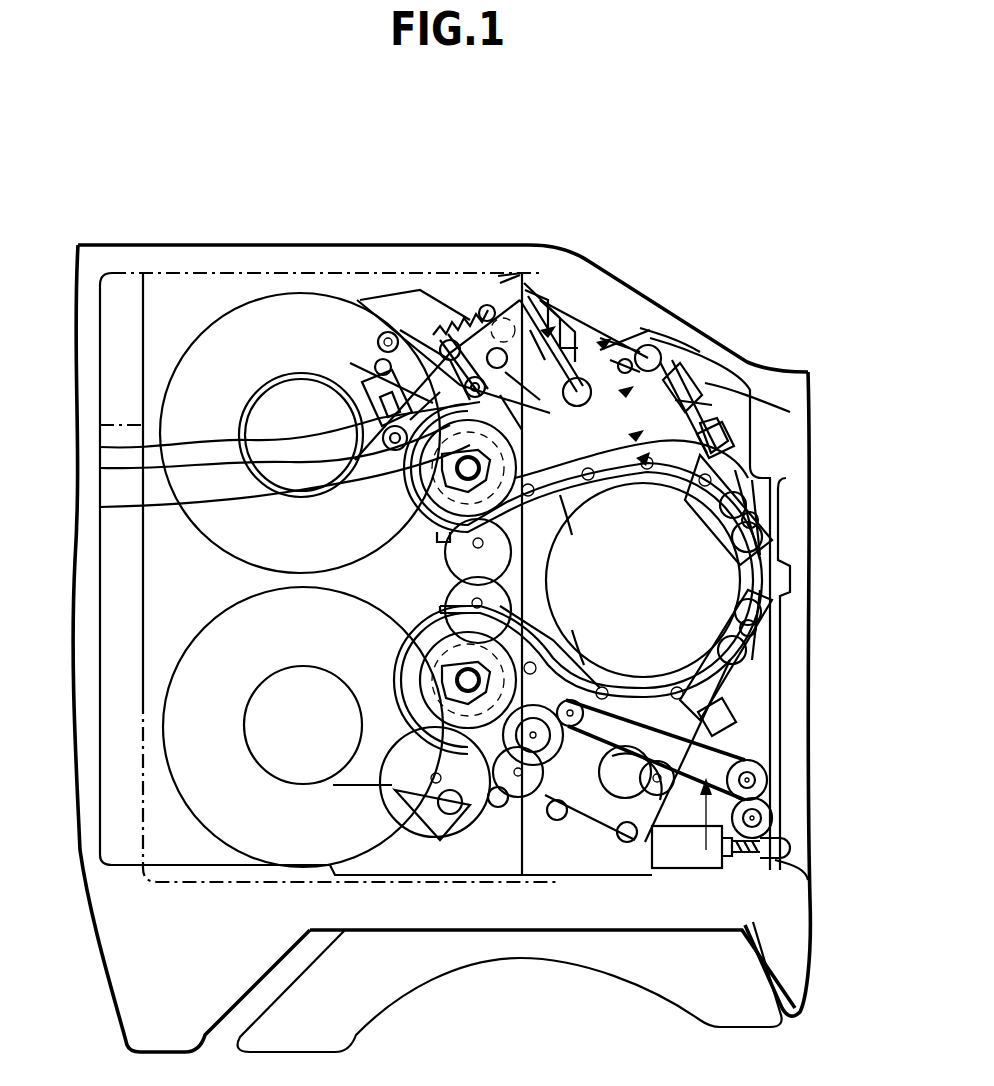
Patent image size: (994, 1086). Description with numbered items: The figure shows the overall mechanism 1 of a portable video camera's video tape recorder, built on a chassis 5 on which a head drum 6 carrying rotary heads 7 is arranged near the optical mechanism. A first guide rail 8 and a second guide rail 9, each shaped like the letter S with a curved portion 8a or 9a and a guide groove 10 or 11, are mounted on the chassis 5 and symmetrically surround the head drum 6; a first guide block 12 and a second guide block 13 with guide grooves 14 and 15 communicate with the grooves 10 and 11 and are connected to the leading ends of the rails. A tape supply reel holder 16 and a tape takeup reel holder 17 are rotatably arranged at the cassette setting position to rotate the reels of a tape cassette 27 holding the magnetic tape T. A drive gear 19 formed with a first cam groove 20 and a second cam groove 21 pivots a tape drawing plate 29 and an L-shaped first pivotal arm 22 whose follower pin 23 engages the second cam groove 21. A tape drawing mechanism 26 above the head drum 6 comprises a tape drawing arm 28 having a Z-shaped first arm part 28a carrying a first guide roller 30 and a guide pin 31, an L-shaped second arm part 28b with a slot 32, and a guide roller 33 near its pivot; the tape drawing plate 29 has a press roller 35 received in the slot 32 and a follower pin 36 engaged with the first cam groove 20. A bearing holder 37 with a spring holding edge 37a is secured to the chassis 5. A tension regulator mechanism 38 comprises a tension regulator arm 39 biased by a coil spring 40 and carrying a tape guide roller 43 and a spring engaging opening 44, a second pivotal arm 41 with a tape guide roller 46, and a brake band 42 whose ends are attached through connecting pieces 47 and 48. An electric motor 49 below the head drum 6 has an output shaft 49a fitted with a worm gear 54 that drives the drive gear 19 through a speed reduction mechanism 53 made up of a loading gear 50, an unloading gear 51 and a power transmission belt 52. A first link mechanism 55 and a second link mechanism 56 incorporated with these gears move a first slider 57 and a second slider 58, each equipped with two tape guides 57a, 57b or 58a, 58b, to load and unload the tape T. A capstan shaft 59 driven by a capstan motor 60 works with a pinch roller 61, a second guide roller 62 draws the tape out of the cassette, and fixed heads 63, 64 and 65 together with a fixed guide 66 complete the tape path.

The recording/reproducing apparatus 1 is at (646, 248).
The chassis 5 is at (76, 346).
The head drum 6 is at (740, 572).
The rotary heads 7 is at (735, 506).
The first guide rail 8 is at (548, 508).
The curved portion 8a is at (410, 540).
The second guide rail 9 is at (532, 632).
The curved portion 9a is at (422, 650).
The guide groove 10 is at (573, 525).
The guide groove 11 is at (578, 635).
The first guide block 12 is at (760, 548).
The second guide block 13 is at (762, 603).
The guide groove 14 is at (758, 522).
The guide groove 15 is at (756, 628).
The tape supply reel holder 16 is at (257, 412).
The tape takeup reel holder 17 is at (257, 710).
The drive gear 19 is at (392, 392).
The first cam groove 20 is at (100, 447).
The second cam groove 21 is at (100, 505).
The first pivotal arm 22 is at (380, 478).
The follower pin 23 is at (410, 495).
The tape drawing mechanism 26 is at (640, 340).
The tape cassette 27 is at (100, 425).
The tape drawing arm 28 is at (705, 382).
The first arm part 28a is at (682, 378).
The second arm part 28b is at (600, 345).
The tape drawing plate 29 is at (430, 368).
The first guide roller 30 is at (660, 355).
The guide pin 31 is at (690, 400).
The slot 32 is at (525, 390).
The guide roller 33 is at (540, 335).
The press roller 35 is at (522, 420).
The follower pin 36 is at (410, 345).
The bearing holder 37 is at (486, 305).
The spring holding edge 37a is at (462, 312).
The tension regulator mechanism 38 is at (522, 300).
The tension regulator arm 39 is at (577, 380).
The coil spring 40 is at (490, 348).
The second pivotal arm 41 is at (492, 325).
The brake band 42 is at (378, 340).
The tape guide roller 43 is at (625, 368).
The spring engaging opening 44 is at (446, 340).
The tape guide roller 46 is at (440, 335).
The connecting piece 47 is at (383, 360).
The connecting piece 48 is at (100, 472).
The electric motor 49 is at (722, 868).
The output shaft 49a is at (790, 882).
The loading gear 50 is at (414, 516).
The unloading gear 51 is at (470, 838).
The power transmission belt 52 is at (760, 760).
The speed reduction mechanism 53 is at (698, 845).
The worm gear 54 is at (790, 848).
The first link mechanism 55 is at (790, 412).
The second link mechanism 56 is at (557, 820).
The first slider 57 is at (632, 508).
The tape guide 57a is at (732, 538).
The tape guide 57b is at (720, 508).
The second slider 58 is at (636, 572).
The tape guide 58a is at (735, 610).
The tape guide 58b is at (720, 648).
The capstan shaft 59 is at (668, 795).
The capstan motor 60 is at (648, 835).
The pinch roller 61 is at (580, 800).
The second guide roller 62 is at (605, 785).
The fixed head 63 is at (700, 378).
The fixed head 64 is at (735, 442).
The fixed head 65 is at (745, 712).
The fixed guide 66 is at (545, 812).
The magnetic tape T is at (430, 845).